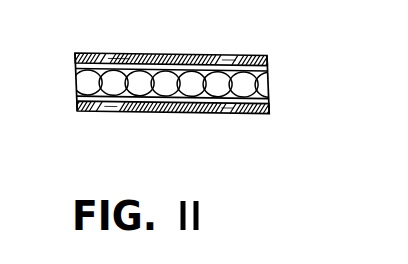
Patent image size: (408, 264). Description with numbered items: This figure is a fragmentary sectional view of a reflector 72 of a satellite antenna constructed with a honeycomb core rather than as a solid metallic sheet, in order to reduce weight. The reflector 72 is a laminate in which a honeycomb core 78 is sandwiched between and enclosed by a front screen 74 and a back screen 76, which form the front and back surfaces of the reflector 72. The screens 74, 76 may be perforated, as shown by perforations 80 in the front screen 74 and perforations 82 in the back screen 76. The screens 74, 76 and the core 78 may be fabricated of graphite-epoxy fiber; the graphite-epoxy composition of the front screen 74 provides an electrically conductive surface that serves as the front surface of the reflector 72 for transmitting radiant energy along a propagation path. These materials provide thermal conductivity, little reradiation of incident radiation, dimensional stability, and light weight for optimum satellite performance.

The reflector 72 is at (275, 81).
The front screen 74 is at (76, 108).
The back screen 76 is at (153, 53).
The honeycomb core 78 is at (75, 79).
The perforations 80 is at (114, 112).
The perforations 82 is at (117, 54).